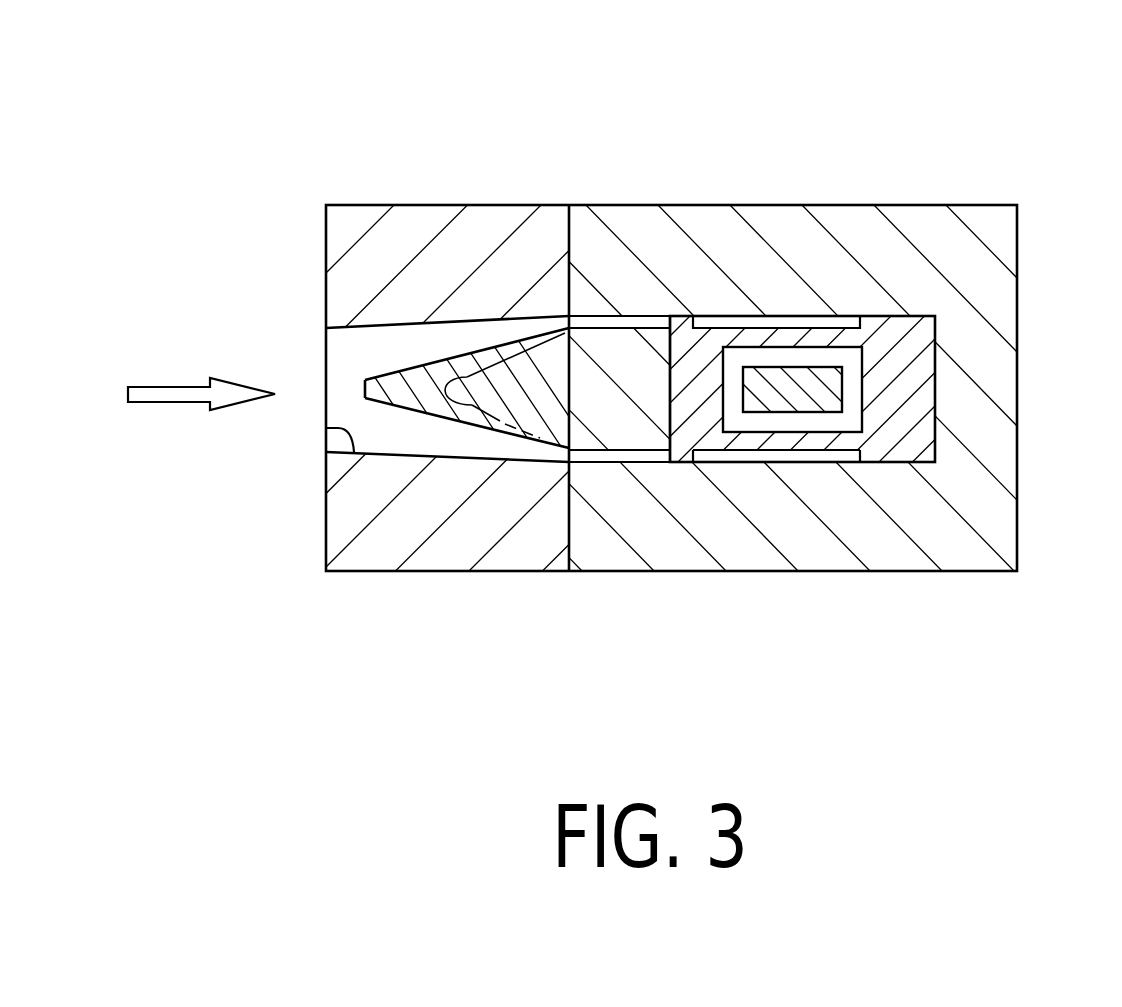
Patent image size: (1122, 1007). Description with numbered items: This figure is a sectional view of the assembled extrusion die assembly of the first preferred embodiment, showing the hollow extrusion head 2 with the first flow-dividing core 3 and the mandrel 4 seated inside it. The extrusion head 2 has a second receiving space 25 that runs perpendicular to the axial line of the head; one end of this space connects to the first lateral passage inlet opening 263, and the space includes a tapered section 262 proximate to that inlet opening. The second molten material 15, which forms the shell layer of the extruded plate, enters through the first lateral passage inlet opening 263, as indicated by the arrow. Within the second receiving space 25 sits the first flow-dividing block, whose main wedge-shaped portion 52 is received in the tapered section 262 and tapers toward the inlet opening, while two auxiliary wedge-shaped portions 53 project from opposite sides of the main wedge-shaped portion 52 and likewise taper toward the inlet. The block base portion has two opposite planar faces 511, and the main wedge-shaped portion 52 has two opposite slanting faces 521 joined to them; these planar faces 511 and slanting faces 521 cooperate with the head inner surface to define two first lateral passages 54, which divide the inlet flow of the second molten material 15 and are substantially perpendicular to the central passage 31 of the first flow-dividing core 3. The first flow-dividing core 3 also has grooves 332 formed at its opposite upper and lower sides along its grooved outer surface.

The extrusion head 2 is at (667, 168).
The first flow-dividing core 3 is at (935, 403).
The mandrel 4 is at (812, 392).
The second molten material 15 is at (177, 393).
The second receiving space 25 is at (492, 333).
The central passage 31 is at (748, 420).
The main wedge-shaped portion 52 is at (418, 387).
The auxiliary wedge-shaped portions 53 is at (472, 340).
The first lateral passages 54 is at (603, 325).
The tapered section 262 is at (473, 457).
The first lateral passage inlet opening 263 is at (330, 428).
The grooves 332 is at (820, 318).
The planar faces 511 is at (603, 333).
The slanting faces 521 is at (385, 380).